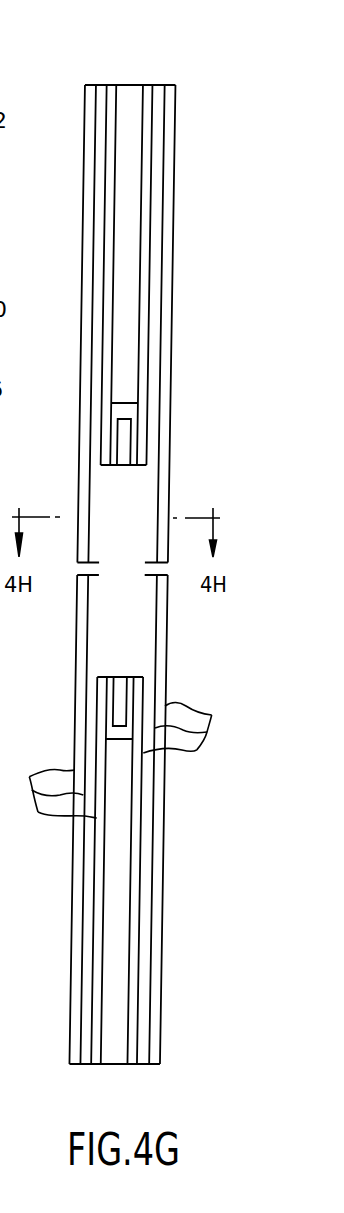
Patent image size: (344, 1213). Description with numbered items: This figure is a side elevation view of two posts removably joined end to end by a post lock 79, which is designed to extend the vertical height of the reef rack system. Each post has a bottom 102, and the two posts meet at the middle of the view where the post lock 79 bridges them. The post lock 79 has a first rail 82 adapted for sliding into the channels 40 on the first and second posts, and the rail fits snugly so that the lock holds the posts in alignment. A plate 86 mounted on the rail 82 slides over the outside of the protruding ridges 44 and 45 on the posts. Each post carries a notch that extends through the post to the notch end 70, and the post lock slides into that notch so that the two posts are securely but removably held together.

The bottom of the post 102 is at (125, 84).
The channel 40 is at (127, 290).
The notch end 70 is at (124, 404).
The first rail 82 is at (123, 432).
The post lock 79 is at (128, 500).
The plate 86 is at (118, 632).
The ridge 45 is at (190, 728).
The ridge 44 is at (54, 783).